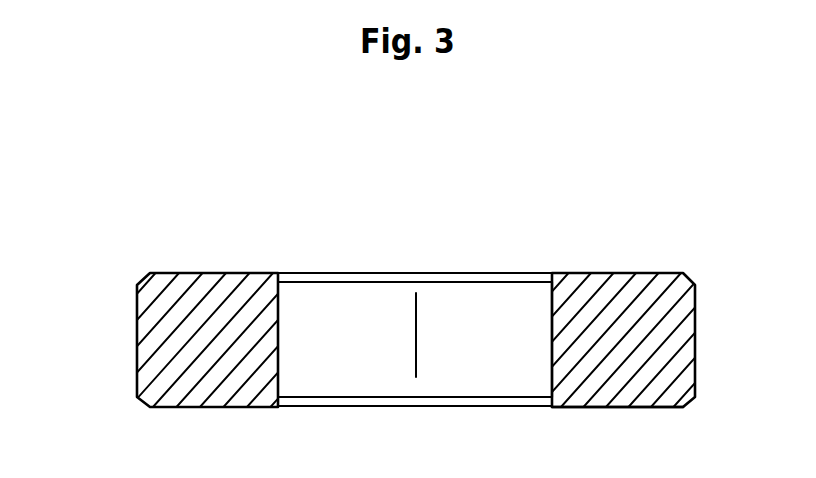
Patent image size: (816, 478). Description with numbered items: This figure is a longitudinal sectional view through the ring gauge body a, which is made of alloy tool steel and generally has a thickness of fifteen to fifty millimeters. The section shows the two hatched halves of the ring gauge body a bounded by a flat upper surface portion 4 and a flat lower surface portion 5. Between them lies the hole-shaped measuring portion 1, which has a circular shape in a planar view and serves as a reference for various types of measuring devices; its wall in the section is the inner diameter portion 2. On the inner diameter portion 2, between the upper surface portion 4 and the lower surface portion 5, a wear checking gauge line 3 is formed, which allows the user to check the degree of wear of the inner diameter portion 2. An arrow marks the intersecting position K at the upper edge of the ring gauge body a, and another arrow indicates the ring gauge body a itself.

The hole-shaped measuring portion 1 is at (348, 366).
The inner diameter portion 2 is at (550, 325).
The wear checking gauge line 3 is at (416, 325).
The upper surface portion 4 is at (75, 302).
The lower surface portion 5 is at (617, 467).
The intersecting position K is at (280, 193).
The ring gauge body a is at (430, 271).